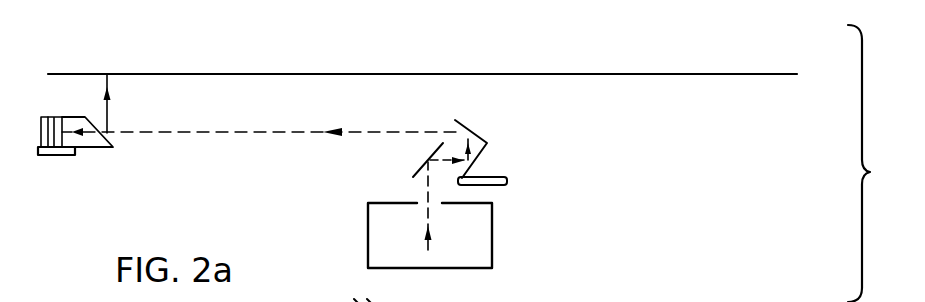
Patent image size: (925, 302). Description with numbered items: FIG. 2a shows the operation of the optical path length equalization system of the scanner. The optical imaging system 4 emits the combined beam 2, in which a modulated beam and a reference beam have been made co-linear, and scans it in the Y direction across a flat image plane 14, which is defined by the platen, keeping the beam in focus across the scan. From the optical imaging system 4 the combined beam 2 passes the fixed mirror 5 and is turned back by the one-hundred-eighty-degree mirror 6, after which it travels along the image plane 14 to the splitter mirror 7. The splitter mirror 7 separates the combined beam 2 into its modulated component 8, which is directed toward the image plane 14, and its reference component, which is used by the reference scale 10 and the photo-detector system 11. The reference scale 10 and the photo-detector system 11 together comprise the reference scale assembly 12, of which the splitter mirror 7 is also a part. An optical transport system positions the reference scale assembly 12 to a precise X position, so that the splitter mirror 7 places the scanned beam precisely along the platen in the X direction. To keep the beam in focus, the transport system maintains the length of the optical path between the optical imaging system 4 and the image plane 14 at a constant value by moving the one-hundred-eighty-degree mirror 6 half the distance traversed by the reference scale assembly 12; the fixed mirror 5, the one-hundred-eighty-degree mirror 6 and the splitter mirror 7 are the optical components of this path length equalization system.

The combined beam 2 is at (217, 132).
The optical imaging system 4 is at (368, 237).
The fixed mirror 5 is at (420, 165).
The 180° mirror 6 is at (478, 125).
The splitter mirror 7 is at (111, 137).
The modulated component 8 is at (110, 120).
The reference scale 10 is at (58, 116).
The photo-detector system 11 is at (50, 116).
The reference scale assembly 12 is at (47, 160).
The image plane 14 is at (327, 74).